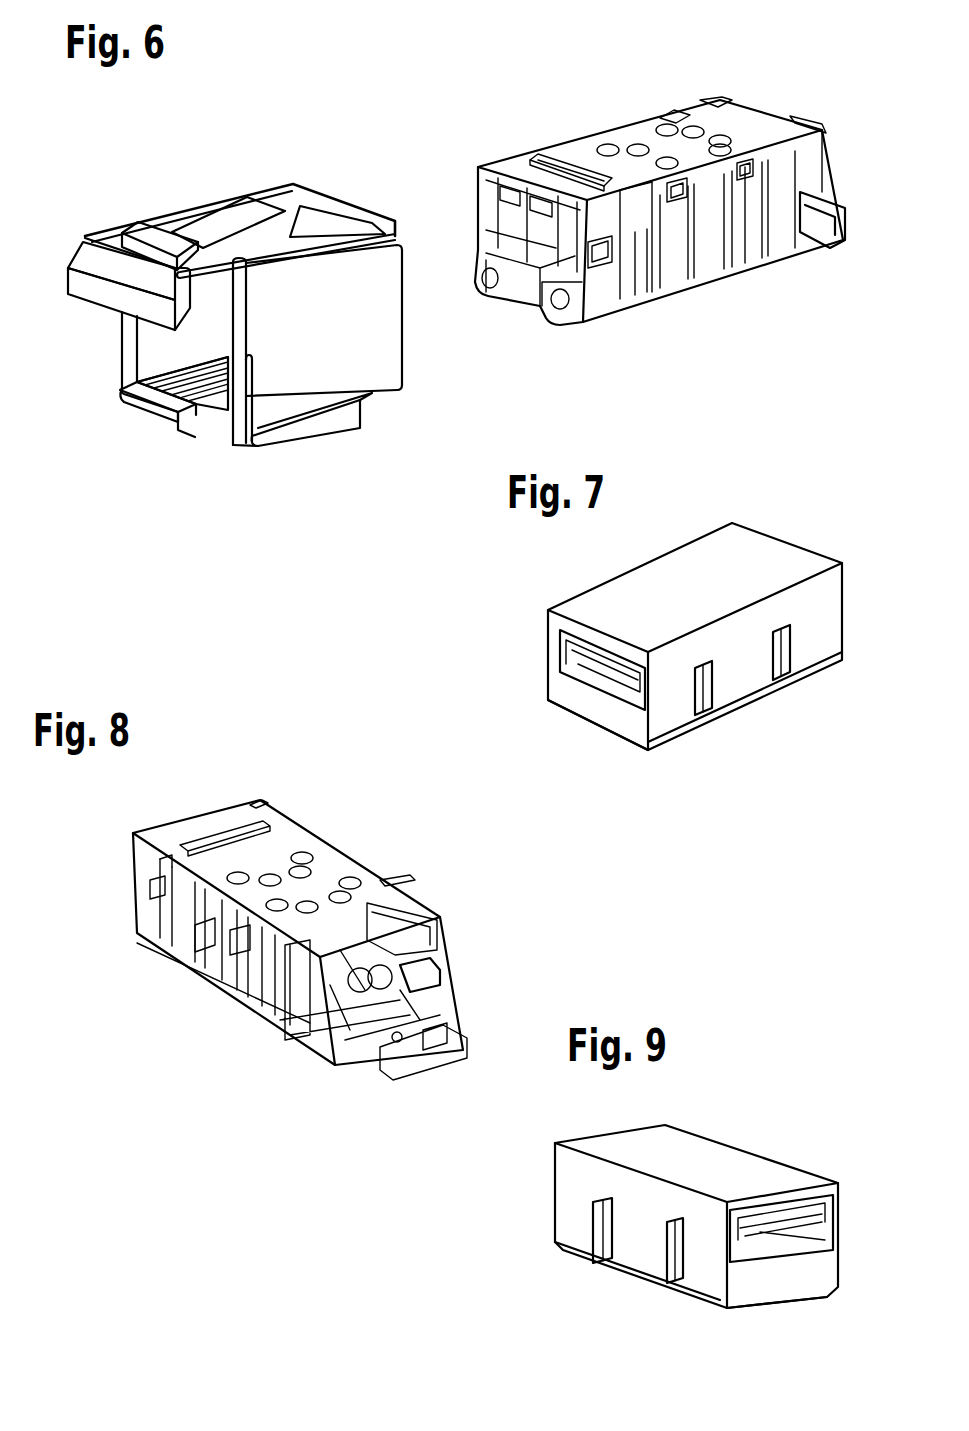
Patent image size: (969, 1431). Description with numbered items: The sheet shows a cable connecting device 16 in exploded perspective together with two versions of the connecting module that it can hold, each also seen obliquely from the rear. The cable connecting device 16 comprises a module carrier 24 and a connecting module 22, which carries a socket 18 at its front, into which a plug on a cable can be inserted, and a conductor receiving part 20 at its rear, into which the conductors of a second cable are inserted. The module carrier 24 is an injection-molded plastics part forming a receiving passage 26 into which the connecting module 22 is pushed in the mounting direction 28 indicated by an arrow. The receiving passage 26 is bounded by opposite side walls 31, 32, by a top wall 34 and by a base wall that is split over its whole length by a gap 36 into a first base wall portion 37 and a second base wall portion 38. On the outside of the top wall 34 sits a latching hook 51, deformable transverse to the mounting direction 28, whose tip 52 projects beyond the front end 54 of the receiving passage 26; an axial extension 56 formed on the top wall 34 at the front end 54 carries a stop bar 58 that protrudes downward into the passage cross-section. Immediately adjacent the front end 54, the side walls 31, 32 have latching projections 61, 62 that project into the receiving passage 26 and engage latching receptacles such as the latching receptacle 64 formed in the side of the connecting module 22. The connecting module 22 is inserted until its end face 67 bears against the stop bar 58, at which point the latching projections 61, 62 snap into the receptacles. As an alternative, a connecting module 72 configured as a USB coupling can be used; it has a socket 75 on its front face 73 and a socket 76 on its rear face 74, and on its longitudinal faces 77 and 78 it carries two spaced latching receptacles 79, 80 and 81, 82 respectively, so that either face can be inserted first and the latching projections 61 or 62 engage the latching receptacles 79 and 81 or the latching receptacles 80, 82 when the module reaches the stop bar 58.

In FIG. 6, the cable connecting device 16 is at (322, 455).
In FIG. 6, the socket 18 is at (543, 235).
In FIG. 8, the socket 18 is at (294, 882).
In FIG. 6, the conductor receiving part 20 is at (803, 200).
In FIG. 8, the conductor receiving part 20 is at (407, 982).
In FIG. 6, the connecting module 22 is at (668, 98).
In FIG. 8, the connecting module 22 is at (370, 852).
In FIG. 6, the module carrier 24 is at (238, 185).
In FIG. 6, the receiving passage 26 is at (150, 346).
In FIG. 6, the mounting direction 28 is at (430, 322).
In FIG. 6, the side wall 31 is at (147, 358).
In FIG. 6, the side wall 32 is at (358, 275).
In FIG. 6, the top wall 34 is at (298, 218).
In FIG. 6, the gap 36 is at (165, 418).
In FIG. 6, the first base wall portion 37 is at (142, 390).
In FIG. 6, the second base wall portion 38 is at (220, 417).
In FIG. 6, the latching hook 51 is at (200, 230).
In FIG. 6, the tip of the hook 52 is at (152, 240).
In FIG. 6, the front end 54 is at (240, 320).
In FIG. 6, the axial extension 56 is at (112, 267).
In FIG. 6, the stop bar 58 is at (80, 278).
In FIG. 6, the latching projection 61 is at (127, 323).
In FIG. 6, the latching projection 62 is at (212, 382).
In FIG. 6, the latching receptacle 64 is at (642, 273).
In FIG. 8, the latching receptacle 64 is at (165, 953).
In FIG. 6, the end face 67 is at (528, 192).
In FIG. 8, the end face 67 is at (192, 817).
In FIG. 7, the connecting module 72 is at (783, 525).
In FIG. 9, the connecting module 72 is at (743, 1137).
In FIG. 7, the front face 73 is at (633, 730).
In FIG. 9, the rear face 74 is at (777, 1293).
In FIG. 7, the socket 75 is at (612, 682).
In FIG. 9, the socket 76 is at (787, 1247).
In FIG. 7, the longitudinal face 77 is at (743, 690).
In FIG. 9, the longitudinal face 78 is at (643, 1260).
In FIG. 7, the latching receptacle 79 is at (700, 712).
In FIG. 7, the latching receptacle 80 is at (787, 680).
In FIG. 9, the latching receptacle 81 is at (588, 1258).
In FIG. 9, the latching receptacle 82 is at (672, 1272).